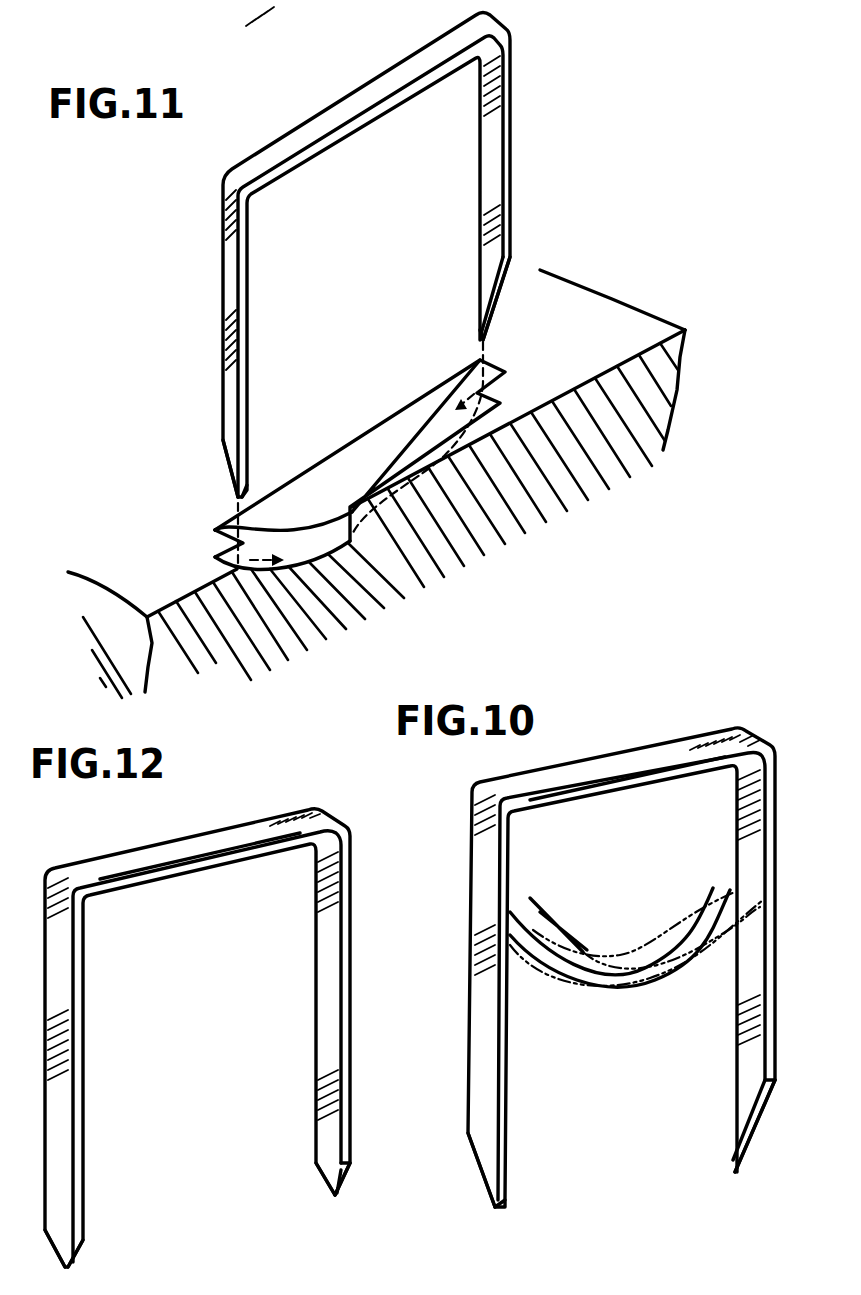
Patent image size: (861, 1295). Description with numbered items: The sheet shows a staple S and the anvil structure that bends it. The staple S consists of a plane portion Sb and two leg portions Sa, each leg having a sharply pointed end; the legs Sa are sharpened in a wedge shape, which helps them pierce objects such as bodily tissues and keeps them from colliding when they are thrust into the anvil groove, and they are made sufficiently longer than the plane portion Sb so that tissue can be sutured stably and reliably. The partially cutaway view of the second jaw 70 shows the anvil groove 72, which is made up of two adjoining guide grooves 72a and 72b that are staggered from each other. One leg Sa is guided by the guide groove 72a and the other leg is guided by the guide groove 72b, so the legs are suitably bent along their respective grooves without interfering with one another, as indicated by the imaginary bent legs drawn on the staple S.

In FIG. 11, the staple S is at (364, 252).
In FIG. 12, the staple S is at (233, 1010).
In FIG. 10, the staple S is at (634, 918).
In FIG. 11, the leg portions Sa is at (226, 421).
In FIG. 12, the leg portions Sa is at (62, 1152).
In FIG. 10, the leg portions Sa is at (753, 865).
In FIG. 12, the plane portion Sb is at (156, 858).
In FIG. 10, the plane portion Sb is at (604, 770).
In FIG. 11, the second jaw 70 is at (588, 346).
In FIG. 11, the anvil groove 72 is at (360, 441).
In FIG. 11, the guide groove 72a is at (385, 473).
In FIG. 11, the guide groove 72b is at (307, 550).